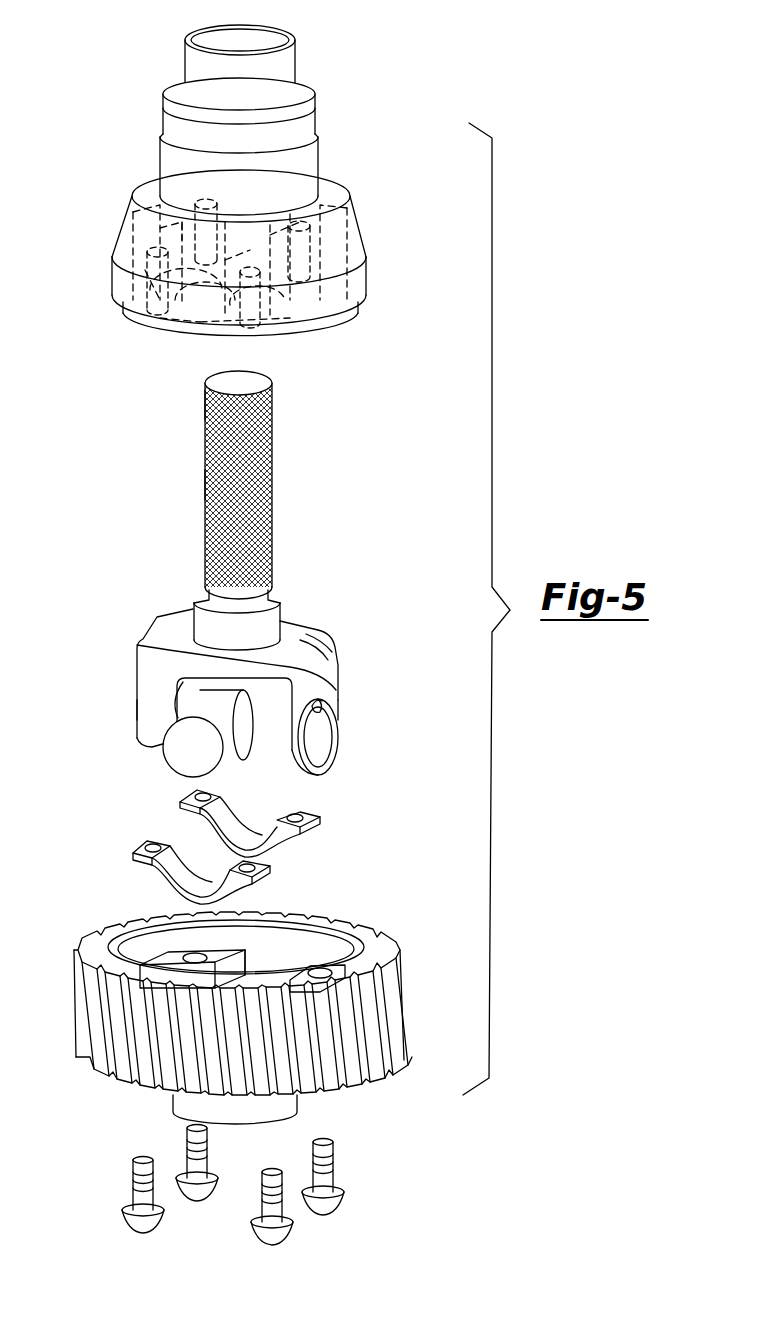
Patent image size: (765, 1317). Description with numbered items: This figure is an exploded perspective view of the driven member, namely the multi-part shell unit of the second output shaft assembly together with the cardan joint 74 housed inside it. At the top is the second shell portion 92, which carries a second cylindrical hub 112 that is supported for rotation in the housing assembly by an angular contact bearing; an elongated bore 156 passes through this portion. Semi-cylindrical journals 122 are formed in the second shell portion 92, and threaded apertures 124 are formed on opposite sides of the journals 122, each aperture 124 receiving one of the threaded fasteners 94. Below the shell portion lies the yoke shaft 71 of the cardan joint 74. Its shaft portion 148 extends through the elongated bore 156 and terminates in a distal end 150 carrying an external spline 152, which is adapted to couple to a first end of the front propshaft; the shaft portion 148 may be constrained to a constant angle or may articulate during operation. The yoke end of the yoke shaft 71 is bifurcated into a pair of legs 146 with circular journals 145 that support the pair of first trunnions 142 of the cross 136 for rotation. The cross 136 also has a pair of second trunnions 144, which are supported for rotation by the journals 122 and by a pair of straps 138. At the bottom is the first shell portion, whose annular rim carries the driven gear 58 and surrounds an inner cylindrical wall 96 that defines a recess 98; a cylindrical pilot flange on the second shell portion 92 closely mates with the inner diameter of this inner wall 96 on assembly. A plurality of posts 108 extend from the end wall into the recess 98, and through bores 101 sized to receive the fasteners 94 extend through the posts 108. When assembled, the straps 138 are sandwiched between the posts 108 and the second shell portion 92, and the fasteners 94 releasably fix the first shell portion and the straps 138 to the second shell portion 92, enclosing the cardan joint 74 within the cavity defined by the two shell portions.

The elongated bore 156 is at (218, 46).
The second cylindrical hub 112 is at (313, 152).
The second shell portion 92 is at (239, 253).
The threaded apertures 124 is at (158, 320).
The semi-cylindrical journals 122 is at (180, 330).
The shaft portion 148 is at (262, 440).
The distal end 150 is at (208, 406).
The external spline 152 is at (217, 486).
The yoke shaft 71 is at (265, 590).
The cardan joint 74 is at (124, 660).
The legs 146 is at (150, 706).
The circular journals 145 is at (320, 715).
The second trunnions 144 is at (225, 742).
The first trunnions 142 is at (313, 750).
The cross 136 is at (250, 752).
The straps 138 is at (160, 843).
The inner cylindrical wall 96 is at (126, 953).
The through bores 101 is at (200, 960).
The recess 98 is at (240, 951).
The posts 108 is at (237, 965).
The driven gear 58 is at (360, 1030).
The fasteners 94 is at (160, 1223).